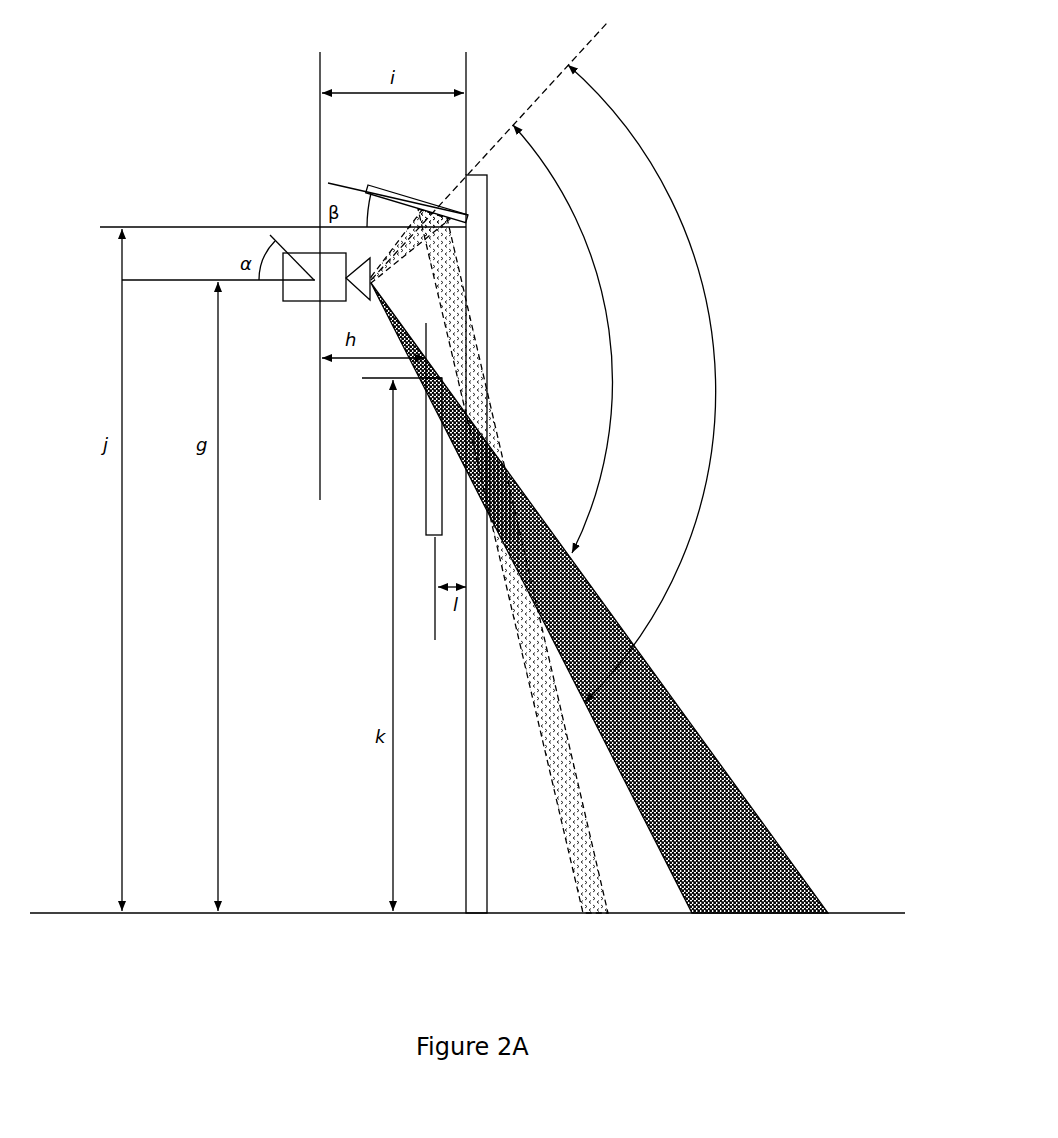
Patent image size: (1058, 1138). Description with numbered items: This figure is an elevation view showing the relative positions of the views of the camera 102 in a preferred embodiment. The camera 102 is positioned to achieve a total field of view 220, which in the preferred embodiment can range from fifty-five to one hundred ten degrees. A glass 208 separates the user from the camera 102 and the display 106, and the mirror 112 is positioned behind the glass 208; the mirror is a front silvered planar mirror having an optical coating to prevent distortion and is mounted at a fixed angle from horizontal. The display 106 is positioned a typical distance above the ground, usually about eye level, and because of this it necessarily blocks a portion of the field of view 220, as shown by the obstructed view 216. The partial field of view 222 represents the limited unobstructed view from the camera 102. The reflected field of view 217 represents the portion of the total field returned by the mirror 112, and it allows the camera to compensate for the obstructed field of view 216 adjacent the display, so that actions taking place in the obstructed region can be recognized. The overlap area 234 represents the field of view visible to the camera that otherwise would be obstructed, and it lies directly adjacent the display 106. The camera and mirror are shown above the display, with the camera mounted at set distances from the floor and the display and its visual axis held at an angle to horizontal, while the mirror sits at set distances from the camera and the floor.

The camera 102 is at (317, 303).
The mirror 112 is at (378, 185).
The display 106 is at (430, 537).
The glass 208 is at (488, 820).
The obstructed view 216 is at (621, 767).
The reflected field of view 217 is at (566, 836).
The field of view 220 is at (677, 220).
The partial field of view 222 is at (610, 343).
The overlap area 234 is at (493, 478).